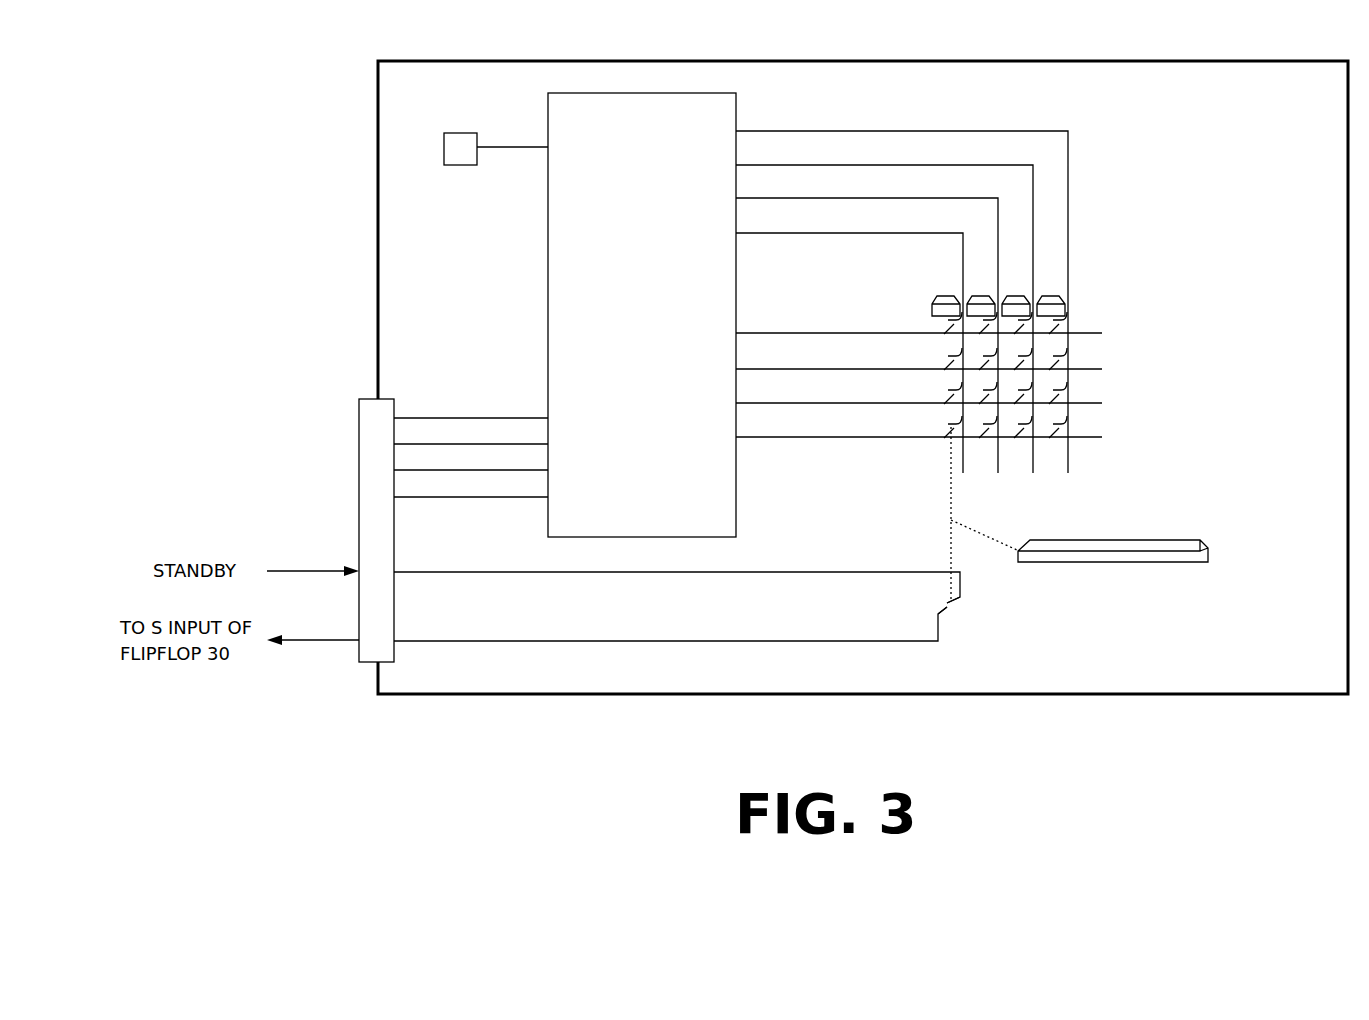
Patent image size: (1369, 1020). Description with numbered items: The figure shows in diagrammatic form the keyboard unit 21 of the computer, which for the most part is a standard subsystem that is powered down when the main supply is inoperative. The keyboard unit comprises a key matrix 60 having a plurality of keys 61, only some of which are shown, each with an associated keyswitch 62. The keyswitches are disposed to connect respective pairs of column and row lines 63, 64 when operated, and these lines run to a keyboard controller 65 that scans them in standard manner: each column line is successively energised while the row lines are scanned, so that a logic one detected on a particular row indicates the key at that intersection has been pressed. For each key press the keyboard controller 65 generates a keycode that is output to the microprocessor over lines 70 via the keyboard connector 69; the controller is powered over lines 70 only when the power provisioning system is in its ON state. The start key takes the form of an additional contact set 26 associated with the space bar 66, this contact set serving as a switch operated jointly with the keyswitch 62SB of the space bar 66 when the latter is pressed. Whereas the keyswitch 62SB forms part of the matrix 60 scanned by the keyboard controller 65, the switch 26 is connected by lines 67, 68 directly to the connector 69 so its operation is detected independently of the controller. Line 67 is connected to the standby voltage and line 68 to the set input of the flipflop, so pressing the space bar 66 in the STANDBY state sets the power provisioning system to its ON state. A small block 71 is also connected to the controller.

The keyboard unit 21 is at (377, 105).
The additional contact set 26 is at (946, 609).
The key matrix 60 is at (1168, 382).
The keys 61 is at (942, 300).
The keyswitch 62 is at (944, 331).
The keyswitch of the space bar 62SB is at (945, 432).
The column lines 63 is at (963, 281).
The row lines 64 is at (811, 437).
The keyboard controller 65 is at (656, 378).
The space bar 66 is at (1098, 553).
The line 67 is at (693, 578).
The line 68 is at (830, 636).
The keyboard connector 69 is at (364, 430).
The lines 70 is at (496, 418).
The clock/oscillator block 71 is at (459, 165).